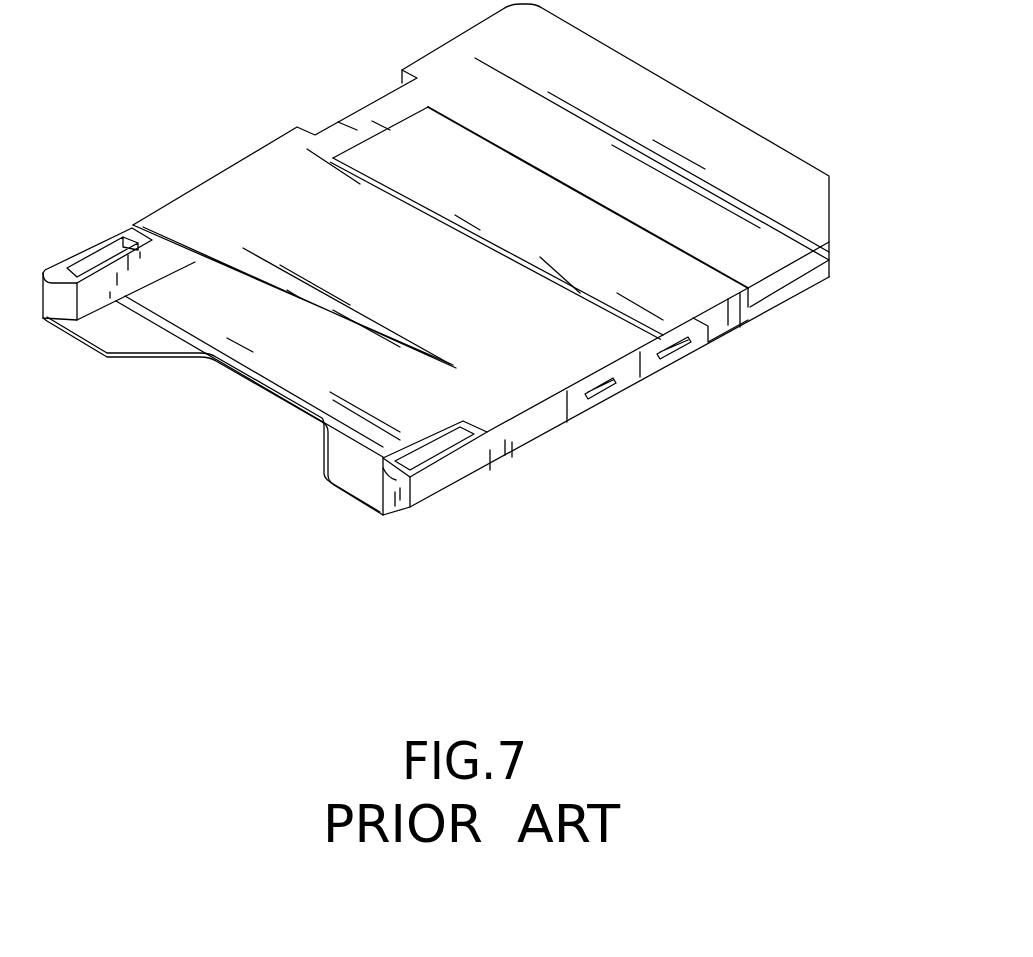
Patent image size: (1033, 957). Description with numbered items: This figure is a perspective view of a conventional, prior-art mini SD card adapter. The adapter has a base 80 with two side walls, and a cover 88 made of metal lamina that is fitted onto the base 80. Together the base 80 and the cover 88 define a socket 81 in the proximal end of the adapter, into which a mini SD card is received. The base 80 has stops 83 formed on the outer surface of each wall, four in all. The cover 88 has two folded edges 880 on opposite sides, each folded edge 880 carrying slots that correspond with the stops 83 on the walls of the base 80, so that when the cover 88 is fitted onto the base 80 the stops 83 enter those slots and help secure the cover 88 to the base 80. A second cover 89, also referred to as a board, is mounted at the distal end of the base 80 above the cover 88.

The base 80 is at (537, 433).
The socket 81 is at (317, 403).
The stop 83 is at (680, 345).
The cover 88 is at (245, 173).
The second cover 89 is at (678, 96).
The folded edge 880 is at (643, 375).